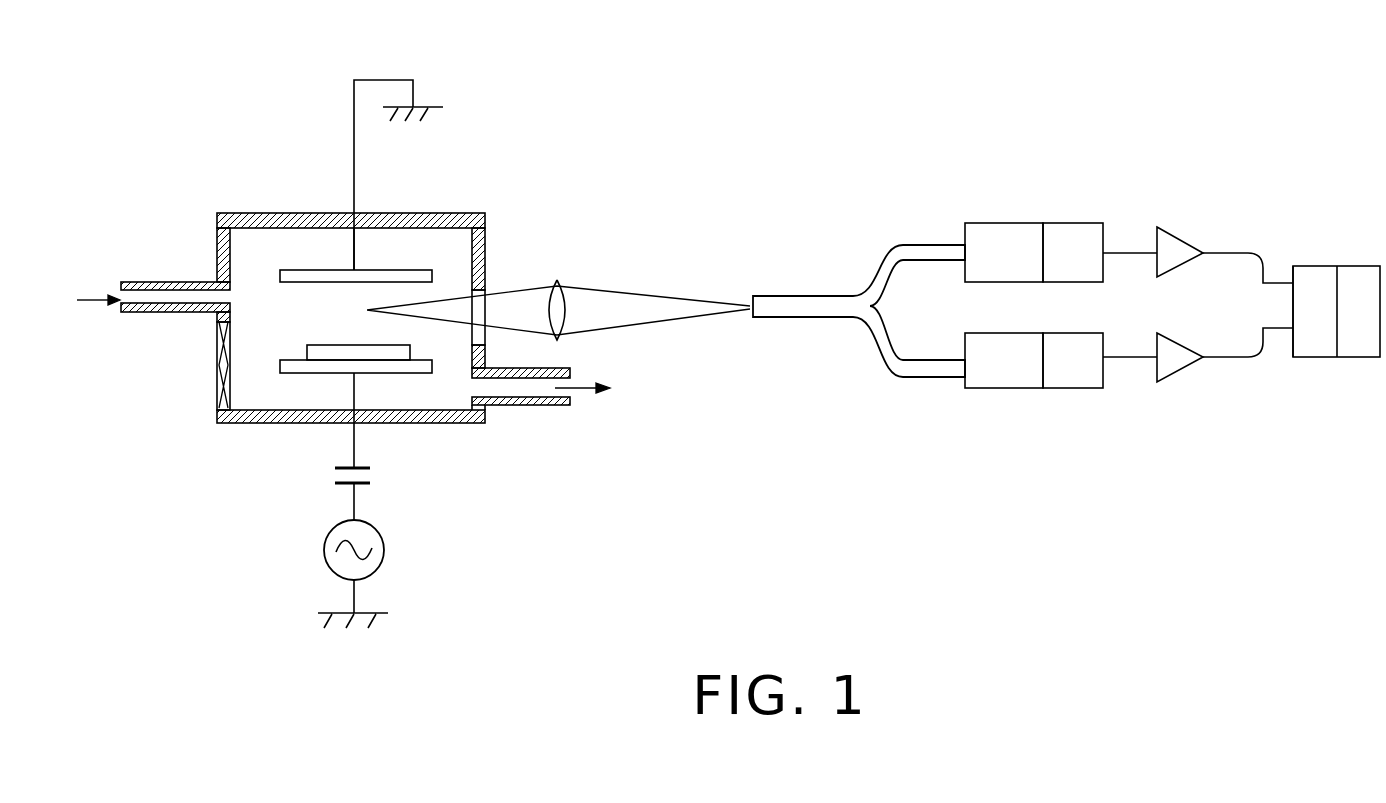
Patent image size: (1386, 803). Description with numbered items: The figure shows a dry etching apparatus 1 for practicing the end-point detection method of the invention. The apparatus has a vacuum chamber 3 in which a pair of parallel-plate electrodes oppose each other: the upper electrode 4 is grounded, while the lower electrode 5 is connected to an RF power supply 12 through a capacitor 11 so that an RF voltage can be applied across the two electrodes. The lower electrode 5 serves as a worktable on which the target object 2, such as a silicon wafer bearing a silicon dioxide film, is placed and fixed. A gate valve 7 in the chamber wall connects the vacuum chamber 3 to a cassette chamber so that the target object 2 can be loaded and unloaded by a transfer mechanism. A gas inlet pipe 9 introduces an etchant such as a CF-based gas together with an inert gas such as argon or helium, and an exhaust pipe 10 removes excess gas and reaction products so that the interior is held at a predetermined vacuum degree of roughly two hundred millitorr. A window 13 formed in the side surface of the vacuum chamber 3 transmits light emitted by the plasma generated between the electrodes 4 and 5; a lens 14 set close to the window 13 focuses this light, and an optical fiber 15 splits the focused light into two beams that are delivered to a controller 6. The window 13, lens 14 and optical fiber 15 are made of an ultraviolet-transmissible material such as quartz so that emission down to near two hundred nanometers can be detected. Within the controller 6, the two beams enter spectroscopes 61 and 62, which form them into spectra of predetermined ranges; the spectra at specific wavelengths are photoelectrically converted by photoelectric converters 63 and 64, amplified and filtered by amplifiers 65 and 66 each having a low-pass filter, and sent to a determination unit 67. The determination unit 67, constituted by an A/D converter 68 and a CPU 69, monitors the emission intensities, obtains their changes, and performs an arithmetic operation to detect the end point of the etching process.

The dry etching apparatus 1 is at (518, 118).
The target object 2 is at (307, 345).
The vacuum chamber 3 is at (448, 213).
The upper electrode 4 is at (287, 270).
The lower electrode 5 is at (282, 374).
The controller 6 is at (1228, 170).
The gate valve 7 is at (215, 408).
The gas inlet pipe 9 is at (155, 282).
The exhaust pipe 10 is at (542, 408).
The capacitor 11 is at (372, 478).
The RF power supply 12 is at (385, 560).
The window 13 is at (480, 333).
The lens 14 is at (572, 306).
The optical fiber 15 is at (795, 318).
The spectroscope 61 is at (996, 230).
The spectroscope 62 is at (997, 388).
The photoelectric converter 63 is at (1067, 228).
The photoelectric converter 64 is at (1085, 389).
The amplifier 65 is at (1193, 247).
The amplifier 66 is at (1180, 373).
The determination unit 67 is at (1340, 264).
The A/D converter 68 is at (1310, 347).
The CPU 69 is at (1366, 347).